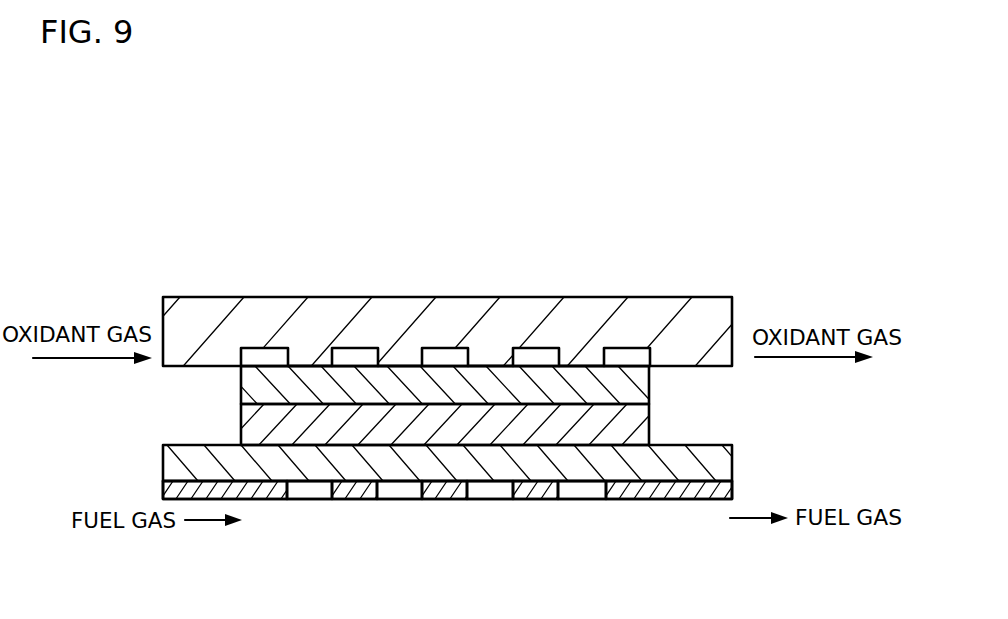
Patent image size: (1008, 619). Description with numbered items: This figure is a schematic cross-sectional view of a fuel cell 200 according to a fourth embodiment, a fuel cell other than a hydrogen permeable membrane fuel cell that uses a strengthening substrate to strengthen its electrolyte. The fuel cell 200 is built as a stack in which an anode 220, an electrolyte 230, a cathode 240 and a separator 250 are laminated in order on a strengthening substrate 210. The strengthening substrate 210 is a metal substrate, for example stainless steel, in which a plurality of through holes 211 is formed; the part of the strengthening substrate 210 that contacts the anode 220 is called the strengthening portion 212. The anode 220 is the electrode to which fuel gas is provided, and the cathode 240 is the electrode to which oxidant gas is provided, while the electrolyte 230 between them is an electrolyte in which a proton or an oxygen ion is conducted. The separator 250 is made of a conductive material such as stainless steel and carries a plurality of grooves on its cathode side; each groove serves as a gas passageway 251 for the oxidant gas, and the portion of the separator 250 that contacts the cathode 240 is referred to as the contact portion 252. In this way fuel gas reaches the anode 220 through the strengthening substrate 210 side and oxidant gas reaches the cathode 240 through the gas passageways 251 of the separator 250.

The fuel cell 200 is at (588, 245).
The strengthening substrate 210 is at (447, 535).
The through hole 211 is at (411, 493).
The strengthening portion 212 is at (453, 493).
The anode 220 is at (726, 470).
The electrolyte 230 is at (640, 440).
The cathode 240 is at (640, 400).
The separator 250 is at (726, 312).
The gas passageway 251 is at (268, 355).
The contact portion 252 is at (304, 364).